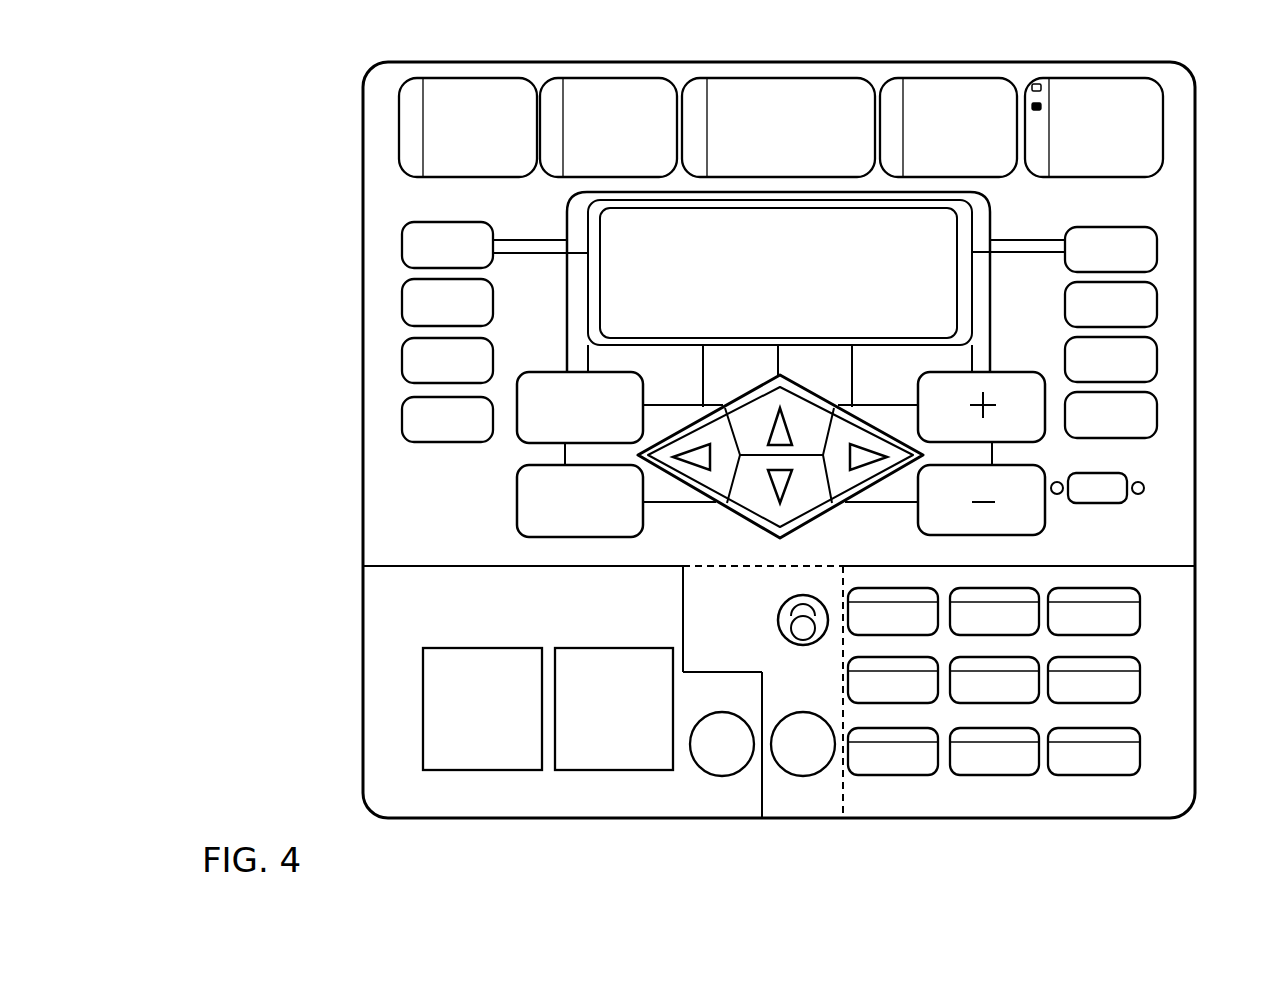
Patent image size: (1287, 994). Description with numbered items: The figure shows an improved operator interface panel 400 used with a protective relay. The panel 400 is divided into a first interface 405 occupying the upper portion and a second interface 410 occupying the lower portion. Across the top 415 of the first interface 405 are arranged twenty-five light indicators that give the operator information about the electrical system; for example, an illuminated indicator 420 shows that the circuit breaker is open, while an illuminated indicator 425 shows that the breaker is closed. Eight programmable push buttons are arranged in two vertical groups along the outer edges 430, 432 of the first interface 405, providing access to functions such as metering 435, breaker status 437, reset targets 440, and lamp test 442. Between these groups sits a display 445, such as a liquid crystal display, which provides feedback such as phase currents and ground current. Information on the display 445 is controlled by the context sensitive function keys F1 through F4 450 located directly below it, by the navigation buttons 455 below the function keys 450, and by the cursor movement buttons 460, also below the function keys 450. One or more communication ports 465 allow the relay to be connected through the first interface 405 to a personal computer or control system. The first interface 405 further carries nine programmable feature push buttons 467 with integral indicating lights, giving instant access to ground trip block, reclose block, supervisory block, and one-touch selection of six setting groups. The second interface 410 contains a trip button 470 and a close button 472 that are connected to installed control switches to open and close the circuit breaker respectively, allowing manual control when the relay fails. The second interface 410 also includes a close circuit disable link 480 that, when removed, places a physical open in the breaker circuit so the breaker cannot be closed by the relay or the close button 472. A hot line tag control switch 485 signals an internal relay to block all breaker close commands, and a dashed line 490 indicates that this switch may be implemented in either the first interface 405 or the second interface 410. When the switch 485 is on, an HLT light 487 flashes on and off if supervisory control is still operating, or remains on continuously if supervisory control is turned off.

The interface panel 400 is at (263, 490).
The first interface 405 is at (1195, 248).
The second interface 410 is at (759, 713).
The top of the first interface 415 is at (826, 107).
The indicator 420 is at (1041, 87).
The indicator 425 is at (1034, 106).
The outer edge 430 is at (403, 373).
The outer edge 432 is at (1152, 391).
The metering push button 435 is at (402, 243).
The breaker status push button 437 is at (1158, 303).
The reset targets push button 440 is at (402, 305).
The lamp test push button 442 is at (402, 418).
The display 445 is at (942, 225).
The function keys F1 through F4 450 is at (683, 364).
The navigation buttons 455 is at (522, 416).
The cursor movement buttons 460 is at (832, 470).
The communication ports 465 is at (1115, 483).
The programmable feature push buttons 467 is at (893, 588).
The trip button 470 is at (456, 771).
The close button 472 is at (601, 771).
The close circuit disable link 480 is at (708, 776).
The hot line tag control switch 485 is at (778, 620).
The HLT light 487 is at (805, 777).
The dashed line 490 is at (848, 795).